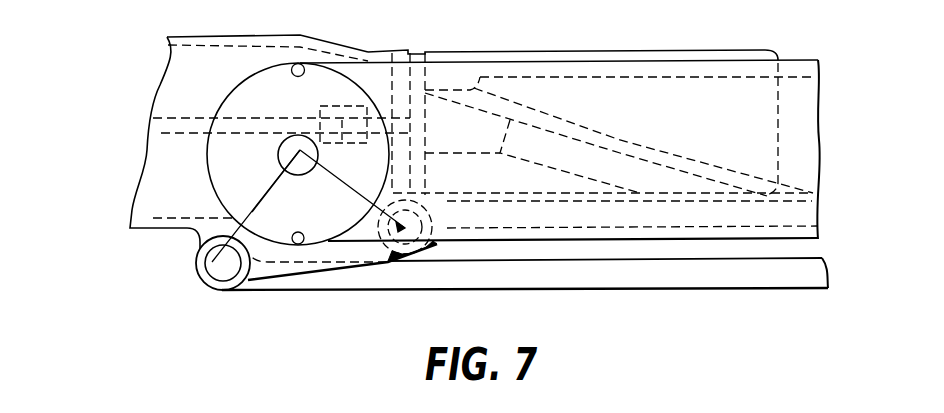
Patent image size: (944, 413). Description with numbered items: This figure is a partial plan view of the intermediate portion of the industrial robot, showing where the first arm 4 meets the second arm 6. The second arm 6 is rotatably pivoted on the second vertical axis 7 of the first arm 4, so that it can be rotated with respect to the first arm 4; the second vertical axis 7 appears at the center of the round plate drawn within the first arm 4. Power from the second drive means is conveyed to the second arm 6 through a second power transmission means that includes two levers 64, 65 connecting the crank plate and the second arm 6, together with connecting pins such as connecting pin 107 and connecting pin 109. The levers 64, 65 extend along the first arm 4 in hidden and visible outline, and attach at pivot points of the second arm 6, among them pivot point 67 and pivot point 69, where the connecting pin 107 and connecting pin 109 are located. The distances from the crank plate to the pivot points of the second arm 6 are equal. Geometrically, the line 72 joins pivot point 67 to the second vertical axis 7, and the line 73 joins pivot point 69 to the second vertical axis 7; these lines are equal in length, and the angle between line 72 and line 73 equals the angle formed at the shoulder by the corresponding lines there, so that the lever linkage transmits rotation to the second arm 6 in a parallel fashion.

The first arm 4 is at (802, 62).
The second arm 6 is at (155, 212).
The second vertical axis 7 is at (300, 162).
The lever 64 is at (786, 222).
The lever 65 is at (678, 283).
The pivot point 67 is at (388, 260).
The pivot point 69 is at (202, 275).
The line 72 is at (337, 166).
The line 73 is at (263, 200).
The connecting pin 107 is at (413, 258).
The connecting pin 109 is at (228, 272).